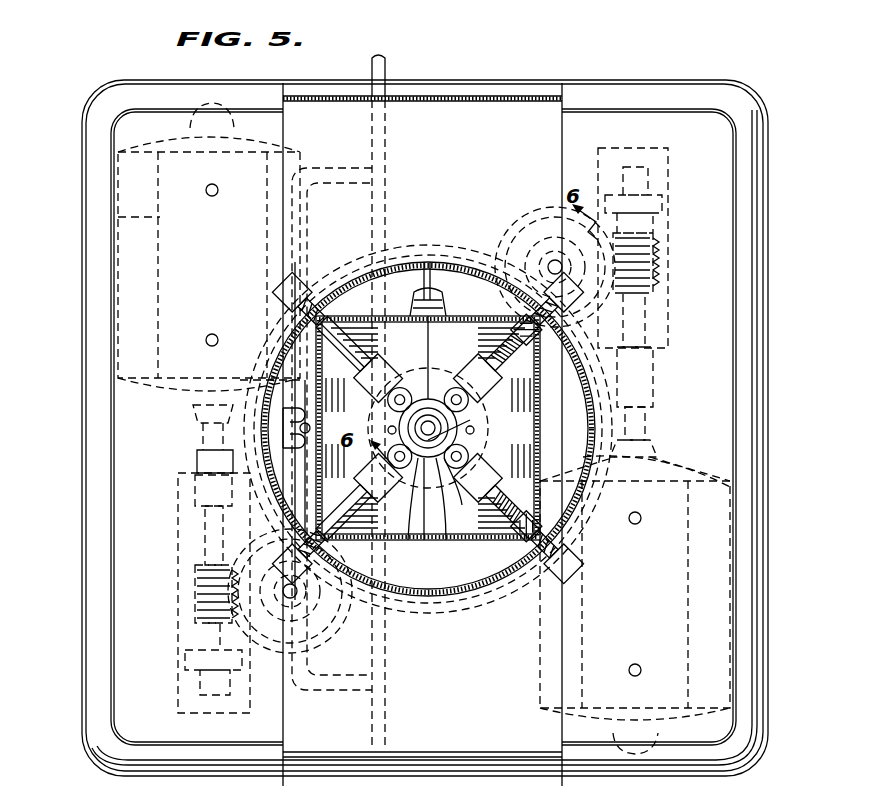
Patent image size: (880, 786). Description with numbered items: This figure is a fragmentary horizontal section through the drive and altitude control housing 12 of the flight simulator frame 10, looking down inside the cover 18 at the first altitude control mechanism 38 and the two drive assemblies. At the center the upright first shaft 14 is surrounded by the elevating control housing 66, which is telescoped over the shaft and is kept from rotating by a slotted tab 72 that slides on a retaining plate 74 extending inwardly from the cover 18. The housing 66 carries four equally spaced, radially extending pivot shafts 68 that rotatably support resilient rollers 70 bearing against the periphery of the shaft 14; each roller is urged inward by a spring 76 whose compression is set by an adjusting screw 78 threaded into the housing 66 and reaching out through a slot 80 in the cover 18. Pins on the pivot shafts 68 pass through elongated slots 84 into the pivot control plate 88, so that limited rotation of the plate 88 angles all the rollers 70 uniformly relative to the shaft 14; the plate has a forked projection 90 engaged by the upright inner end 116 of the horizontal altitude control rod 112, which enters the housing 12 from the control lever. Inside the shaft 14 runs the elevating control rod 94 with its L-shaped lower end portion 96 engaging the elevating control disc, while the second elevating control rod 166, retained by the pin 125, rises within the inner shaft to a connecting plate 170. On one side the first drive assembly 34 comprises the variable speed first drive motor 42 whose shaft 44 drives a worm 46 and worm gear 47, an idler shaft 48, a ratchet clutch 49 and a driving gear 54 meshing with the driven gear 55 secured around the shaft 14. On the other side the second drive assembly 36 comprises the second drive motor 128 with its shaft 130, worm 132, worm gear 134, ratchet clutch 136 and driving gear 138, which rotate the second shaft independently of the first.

The frame 10 is at (126, 76).
The drive and altitude control housing 12 is at (98, 497).
The first shaft 14 is at (427, 540).
The cover 18 is at (135, 461).
The first drive assembly 34 is at (680, 433).
The second drive assembly 36 is at (143, 342).
The first altitude control mechanism 38 is at (470, 285).
The first drive motor 42 is at (717, 576).
The shaft 44 is at (640, 420).
The worm 46 is at (662, 250).
The worm gear 47 is at (548, 215).
The idler shaft 48 is at (655, 306).
The ratchet clutch 49 is at (551, 228).
The driving gear 54 is at (530, 240).
The driven gear 55 is at (436, 257).
The elevating control housing 66 is at (516, 390).
The pivot shafts 68 is at (496, 352).
The resilient rollers 70 is at (392, 372).
The slotted tab 72 is at (408, 300).
The retaining plate 74 is at (431, 288).
The spring 76 is at (539, 340).
The adjusting screw 78 is at (283, 299).
The slots 80 is at (305, 286).
The elongated slots 84 is at (356, 388).
The pivot control plate 88 is at (448, 548).
The forked projection 90 is at (270, 380).
The elevating control rod 94 is at (470, 422).
The L-shaped lower end portion 96 is at (492, 432).
The altitude control rod 112 is at (386, 72).
The upright inner end 116 is at (290, 427).
The pin 125 is at (470, 505).
The second drive motor 128 is at (118, 217).
The shaft 130 is at (196, 533).
The worm 132 is at (194, 581).
The worm gear 134 is at (312, 437).
The ratchet clutch 136 is at (250, 632).
The driving gear 138 is at (294, 601).
The elevating control rod 166 is at (408, 540).
The connecting plate 170 is at (444, 782).